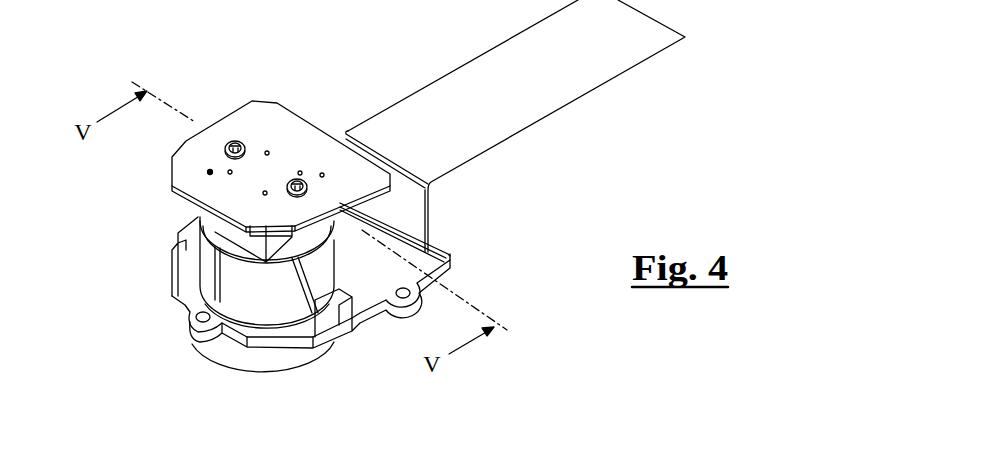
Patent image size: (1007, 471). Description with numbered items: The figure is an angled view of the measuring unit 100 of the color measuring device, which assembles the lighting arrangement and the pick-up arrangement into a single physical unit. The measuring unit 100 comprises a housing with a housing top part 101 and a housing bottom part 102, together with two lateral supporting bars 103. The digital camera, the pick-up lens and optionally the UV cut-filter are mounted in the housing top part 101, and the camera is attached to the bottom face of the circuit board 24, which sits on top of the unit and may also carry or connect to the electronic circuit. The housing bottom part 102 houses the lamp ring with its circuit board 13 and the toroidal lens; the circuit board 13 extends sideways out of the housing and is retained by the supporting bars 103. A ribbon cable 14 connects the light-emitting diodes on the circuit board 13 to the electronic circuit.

The measuring unit 100 is at (152, 335).
The ribbon cable 14 is at (448, 160).
The circuit board 24 is at (192, 163).
The circuit board 13 is at (360, 287).
The housing top part 101 is at (205, 262).
The housing bottom part 102 is at (222, 353).
The supporting bar 103 is at (450, 271).